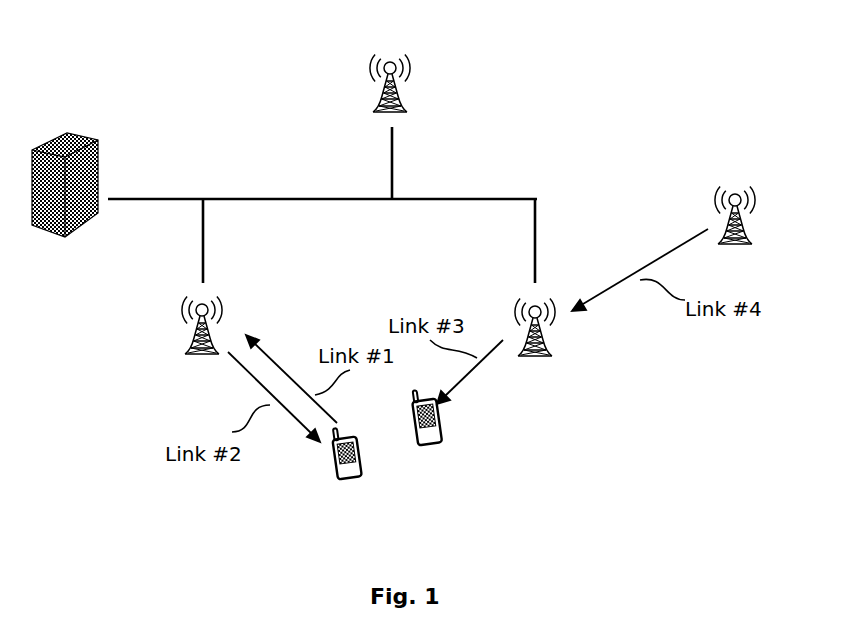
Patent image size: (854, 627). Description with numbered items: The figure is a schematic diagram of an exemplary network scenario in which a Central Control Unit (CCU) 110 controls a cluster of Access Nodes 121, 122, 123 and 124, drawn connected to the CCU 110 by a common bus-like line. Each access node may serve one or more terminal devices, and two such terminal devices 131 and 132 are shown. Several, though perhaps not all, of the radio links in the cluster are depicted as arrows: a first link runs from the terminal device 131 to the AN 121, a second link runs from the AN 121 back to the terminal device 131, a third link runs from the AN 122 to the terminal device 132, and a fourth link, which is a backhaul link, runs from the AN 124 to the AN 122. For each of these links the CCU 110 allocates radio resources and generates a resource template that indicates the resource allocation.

The Central Control Unit (CCU) 110 is at (67, 168).
The Access Node (AN) 121 is at (201, 346).
The Access Node (AN) 122 is at (533, 345).
The Access Node (AN) 123 is at (388, 65).
The Access Node (AN) 124 is at (733, 197).
The terminal device 131 is at (348, 466).
The terminal device 132 is at (429, 431).